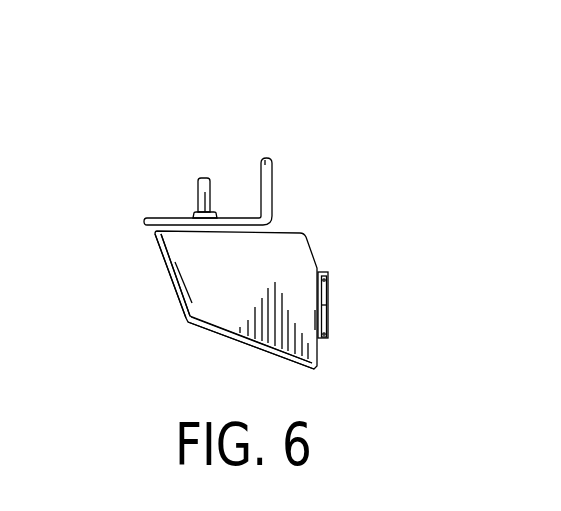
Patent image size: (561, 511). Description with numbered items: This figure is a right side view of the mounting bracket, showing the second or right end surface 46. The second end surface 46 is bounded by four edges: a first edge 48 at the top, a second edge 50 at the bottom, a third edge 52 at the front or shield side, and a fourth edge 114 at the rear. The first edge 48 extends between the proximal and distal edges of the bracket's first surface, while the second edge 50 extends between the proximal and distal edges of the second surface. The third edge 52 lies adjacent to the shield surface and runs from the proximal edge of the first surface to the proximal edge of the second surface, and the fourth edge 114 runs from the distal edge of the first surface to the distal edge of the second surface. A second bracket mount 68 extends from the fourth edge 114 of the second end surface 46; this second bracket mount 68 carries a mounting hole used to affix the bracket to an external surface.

The second end surface 46 is at (242, 285).
The first edge 48 is at (158, 178).
The second edge 50 is at (224, 341).
The third edge 52 is at (163, 284).
The second bracket mount 68 is at (338, 313).
The fourth edge 114 is at (318, 249).